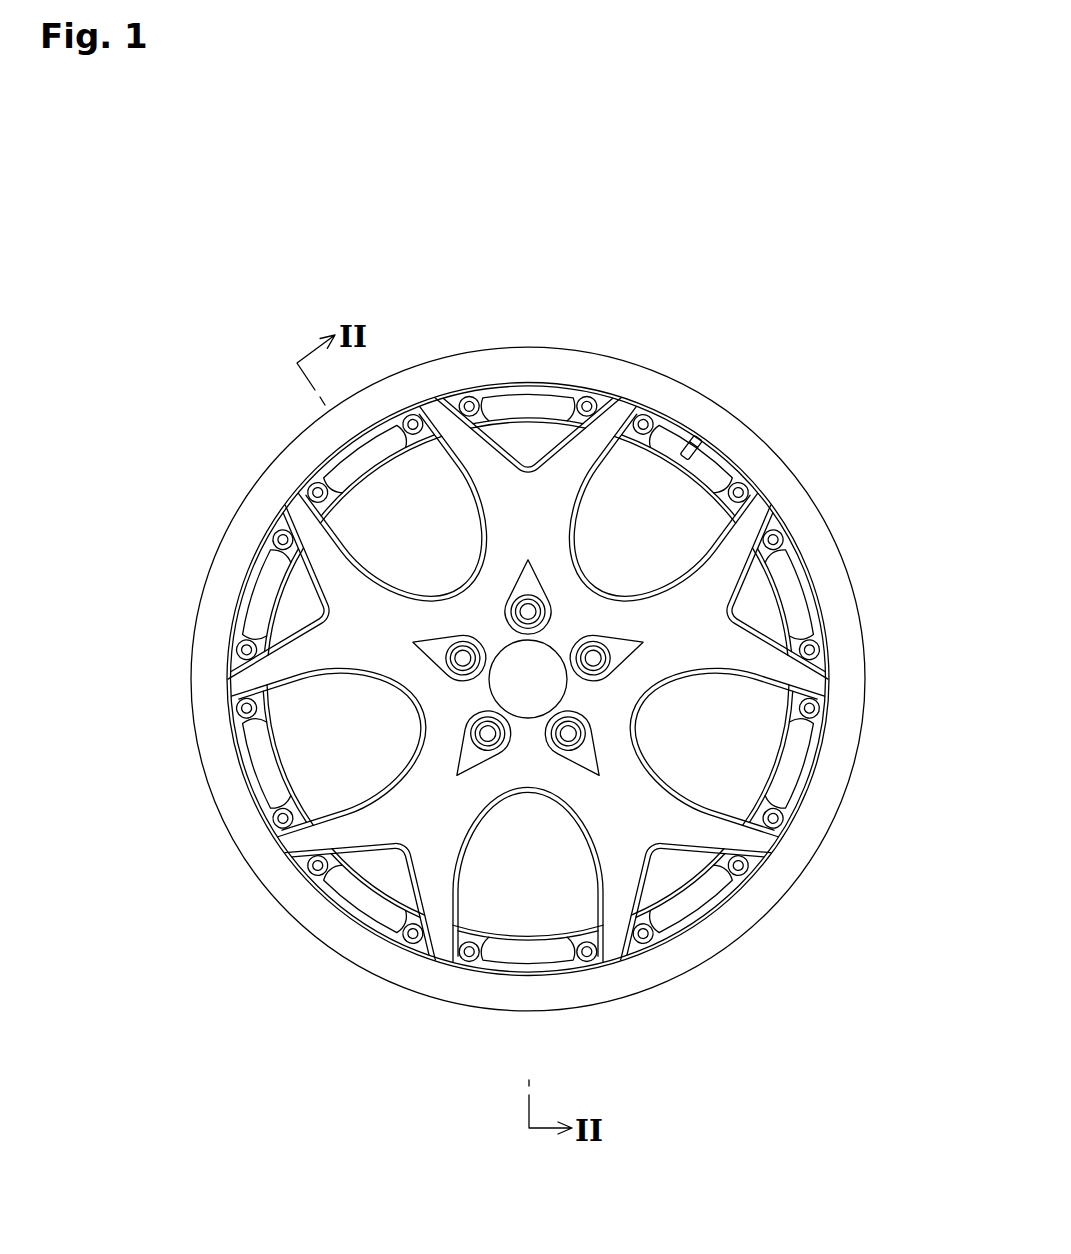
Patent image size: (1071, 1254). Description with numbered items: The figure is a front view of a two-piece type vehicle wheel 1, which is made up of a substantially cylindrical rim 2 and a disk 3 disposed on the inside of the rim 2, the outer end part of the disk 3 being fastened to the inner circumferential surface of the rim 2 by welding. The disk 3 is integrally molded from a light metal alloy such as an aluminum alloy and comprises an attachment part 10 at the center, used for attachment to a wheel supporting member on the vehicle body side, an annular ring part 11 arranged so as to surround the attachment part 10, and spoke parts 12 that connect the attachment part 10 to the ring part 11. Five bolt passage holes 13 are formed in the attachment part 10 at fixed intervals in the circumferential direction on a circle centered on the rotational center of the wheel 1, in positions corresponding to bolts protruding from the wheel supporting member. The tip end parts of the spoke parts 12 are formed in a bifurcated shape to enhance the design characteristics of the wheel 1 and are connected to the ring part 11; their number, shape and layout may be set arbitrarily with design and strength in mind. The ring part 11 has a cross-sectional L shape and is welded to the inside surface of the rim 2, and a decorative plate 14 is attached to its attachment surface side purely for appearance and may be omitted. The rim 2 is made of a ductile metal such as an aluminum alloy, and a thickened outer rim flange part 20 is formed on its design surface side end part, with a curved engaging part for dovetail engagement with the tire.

The vehicle wheel 1 is at (753, 383).
The rim 2 is at (606, 351).
The disk 3 is at (543, 452).
The attachment part 10 is at (478, 609).
The ring part 11 is at (800, 556).
The spoke parts 12 is at (503, 505).
The bolt passage holes 13 is at (536, 612).
The decorative plate 14 is at (790, 596).
The outer rim flange part 20 is at (752, 907).